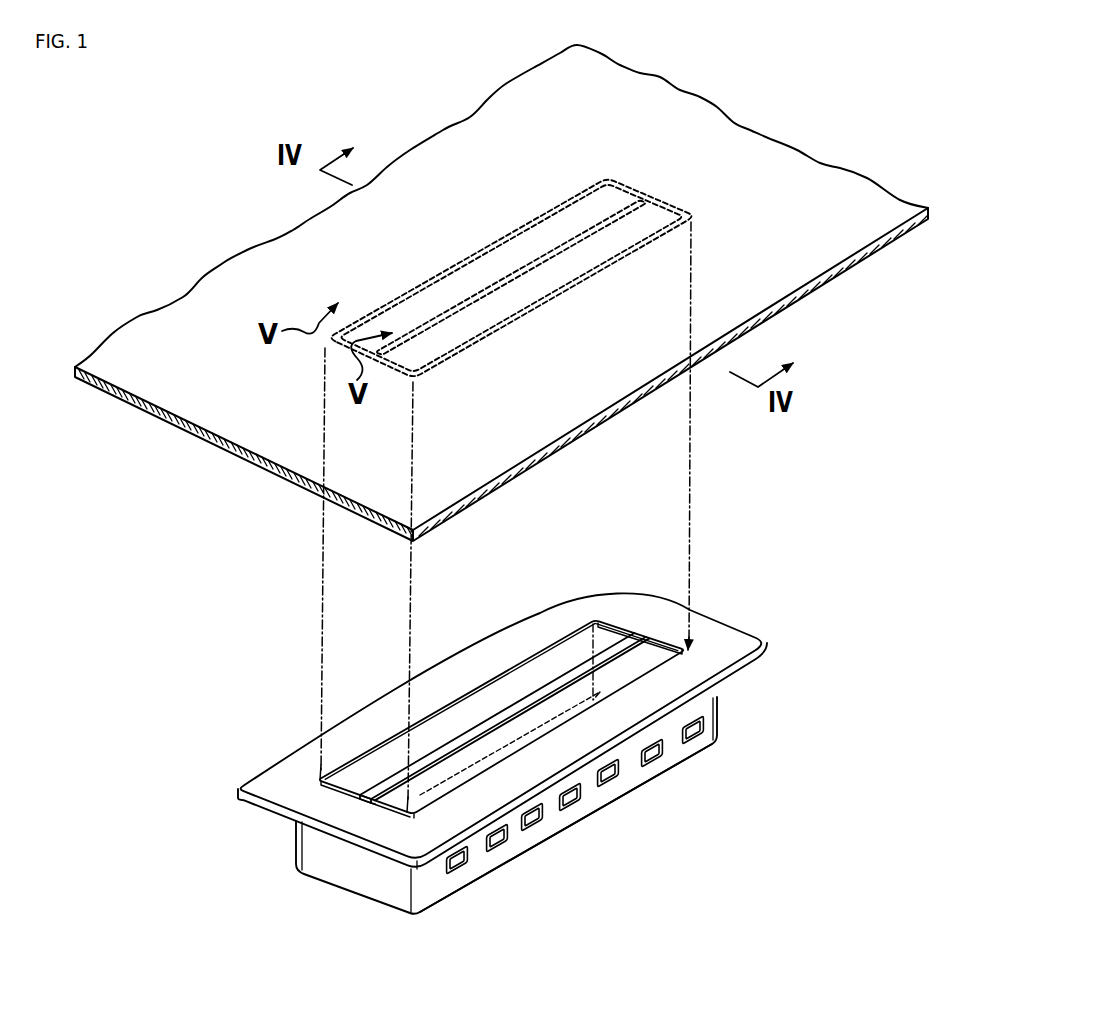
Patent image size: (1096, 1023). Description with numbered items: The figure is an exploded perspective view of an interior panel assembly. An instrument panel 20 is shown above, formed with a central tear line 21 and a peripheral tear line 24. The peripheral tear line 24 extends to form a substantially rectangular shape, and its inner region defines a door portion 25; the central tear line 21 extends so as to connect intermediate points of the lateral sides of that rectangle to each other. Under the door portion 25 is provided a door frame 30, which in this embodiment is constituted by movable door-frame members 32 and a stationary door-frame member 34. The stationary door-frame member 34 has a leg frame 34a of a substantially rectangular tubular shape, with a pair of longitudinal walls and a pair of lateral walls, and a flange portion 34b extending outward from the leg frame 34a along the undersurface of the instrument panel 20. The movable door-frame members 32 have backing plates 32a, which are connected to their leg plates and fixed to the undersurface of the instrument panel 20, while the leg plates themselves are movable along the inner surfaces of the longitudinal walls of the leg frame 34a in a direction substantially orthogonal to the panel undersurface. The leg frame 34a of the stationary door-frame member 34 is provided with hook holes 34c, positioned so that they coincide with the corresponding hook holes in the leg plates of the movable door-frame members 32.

The instrument panel 20 is at (757, 151).
The central tear line 21 is at (530, 258).
The peripheral tear line 24 is at (463, 256).
The door portion 25 is at (393, 292).
The door frame 30 is at (700, 605).
The movable door-frame members 32 is at (564, 652).
The backing plates 32a is at (475, 708).
The stationary door-frame member 34 is at (370, 882).
The leg frame 34a is at (703, 753).
The flange portion 34b is at (733, 636).
The hook holes 34c is at (705, 722).